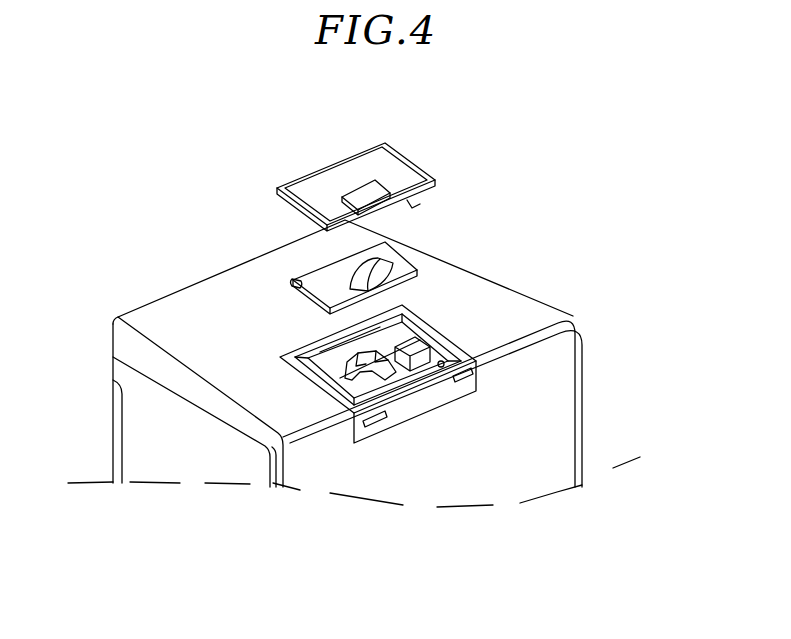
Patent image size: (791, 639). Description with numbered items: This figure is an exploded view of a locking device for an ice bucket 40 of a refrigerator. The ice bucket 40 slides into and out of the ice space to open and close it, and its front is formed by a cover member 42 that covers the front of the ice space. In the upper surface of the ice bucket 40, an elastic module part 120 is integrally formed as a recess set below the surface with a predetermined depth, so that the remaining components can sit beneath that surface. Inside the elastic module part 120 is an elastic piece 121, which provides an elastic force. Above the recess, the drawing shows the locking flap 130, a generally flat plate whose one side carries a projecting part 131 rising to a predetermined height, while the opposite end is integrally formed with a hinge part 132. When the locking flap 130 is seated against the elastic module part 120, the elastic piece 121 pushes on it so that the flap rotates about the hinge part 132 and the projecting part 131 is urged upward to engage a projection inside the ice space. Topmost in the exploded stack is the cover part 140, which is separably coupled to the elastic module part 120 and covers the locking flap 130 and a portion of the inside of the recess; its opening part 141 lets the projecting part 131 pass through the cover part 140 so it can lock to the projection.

The ice bucket 40 is at (354, 363).
The cover member 42 is at (186, 299).
The elastic module part 120 is at (450, 338).
The elastic piece 121 is at (392, 368).
The locking flap 130 is at (422, 267).
The projecting part 131 is at (383, 264).
The hinge part 132 is at (293, 283).
The cover part 140 is at (424, 155).
The opening part 141 is at (365, 197).